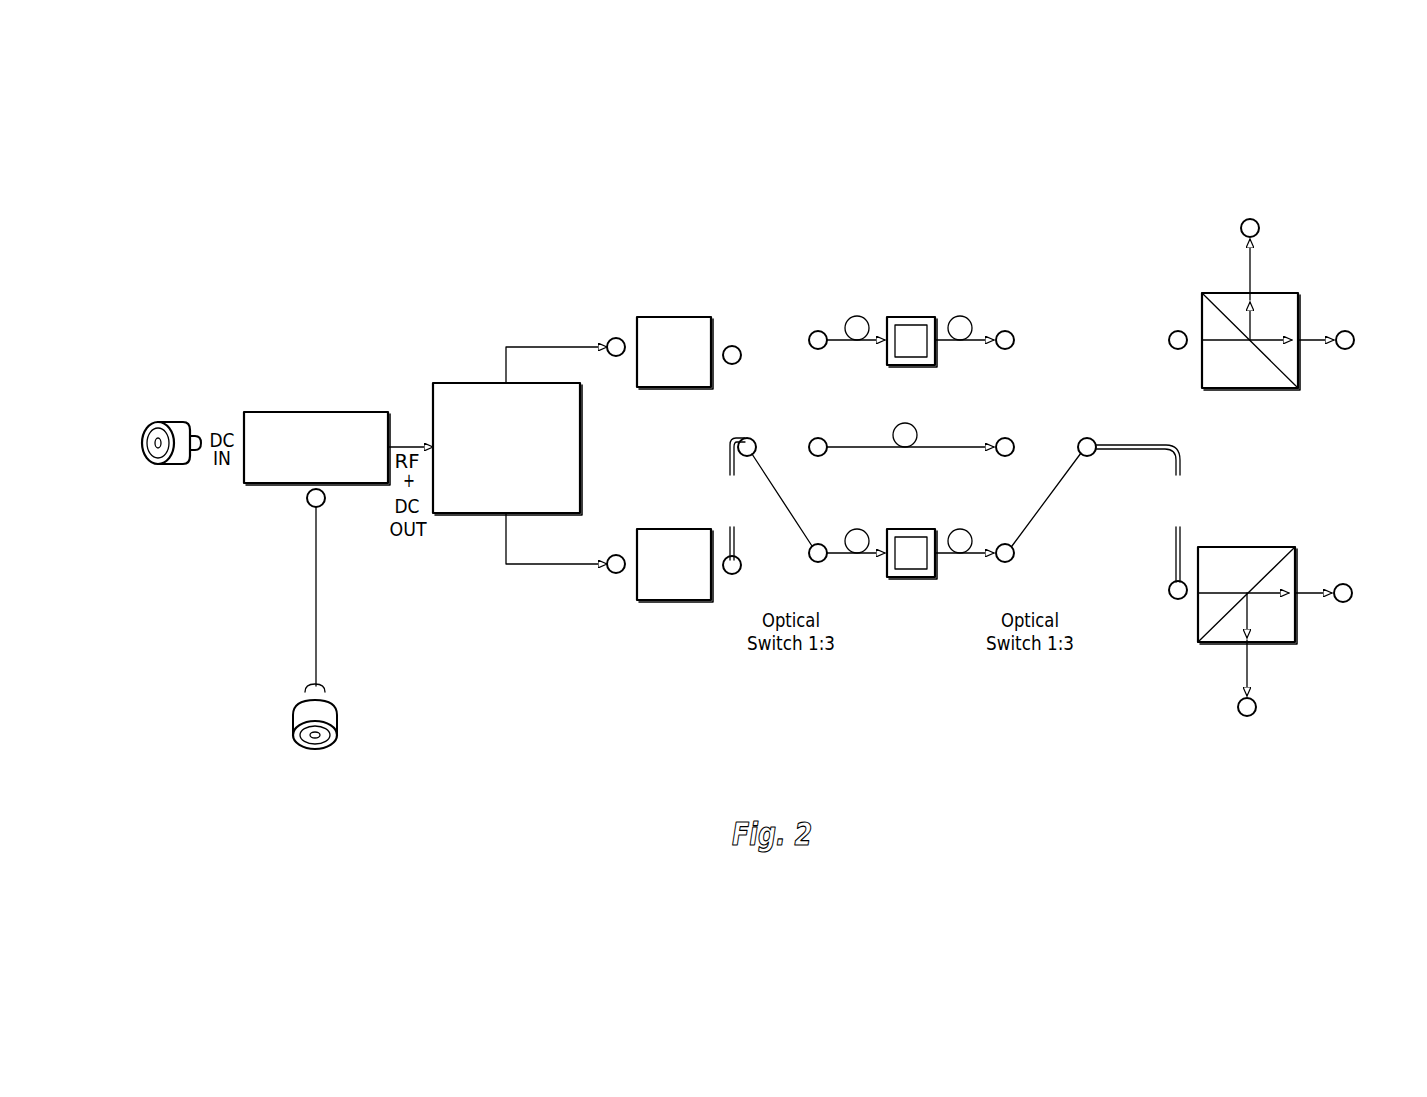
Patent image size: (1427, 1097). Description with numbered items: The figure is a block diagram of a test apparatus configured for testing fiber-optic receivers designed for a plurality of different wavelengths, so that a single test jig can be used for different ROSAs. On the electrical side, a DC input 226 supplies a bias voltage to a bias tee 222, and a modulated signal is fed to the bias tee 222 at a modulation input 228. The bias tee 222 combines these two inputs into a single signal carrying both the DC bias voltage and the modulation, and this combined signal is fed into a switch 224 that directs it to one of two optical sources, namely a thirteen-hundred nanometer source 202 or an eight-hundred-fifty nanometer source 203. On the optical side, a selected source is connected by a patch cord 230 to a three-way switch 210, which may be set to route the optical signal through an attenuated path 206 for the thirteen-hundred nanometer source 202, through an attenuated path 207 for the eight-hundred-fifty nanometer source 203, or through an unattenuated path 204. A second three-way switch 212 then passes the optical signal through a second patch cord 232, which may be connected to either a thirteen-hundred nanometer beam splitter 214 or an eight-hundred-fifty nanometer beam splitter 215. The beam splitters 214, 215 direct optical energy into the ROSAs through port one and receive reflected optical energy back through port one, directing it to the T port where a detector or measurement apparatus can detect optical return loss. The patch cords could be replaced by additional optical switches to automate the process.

The 1300 nanometer source 202 is at (673, 317).
The 850 nanometer source 203 is at (673, 600).
The unattenuated path 204 is at (955, 447).
The attenuated path 206 is at (857, 316).
The attenuated path 207 is at (857, 529).
The three-way switch 210 is at (774, 355).
The second three-way switch 212 is at (1036, 420).
The 1300 nanometer beam splitter 214 is at (1281, 293).
The 850 nanometer beam splitter 215 is at (1275, 547).
The bias tee 222 is at (316, 412).
The switch 224 is at (448, 383).
The DC input 226 is at (168, 466).
The modulation input 228 is at (338, 724).
The patch cord 230 is at (740, 566).
The second patch cord 232 is at (1113, 445).